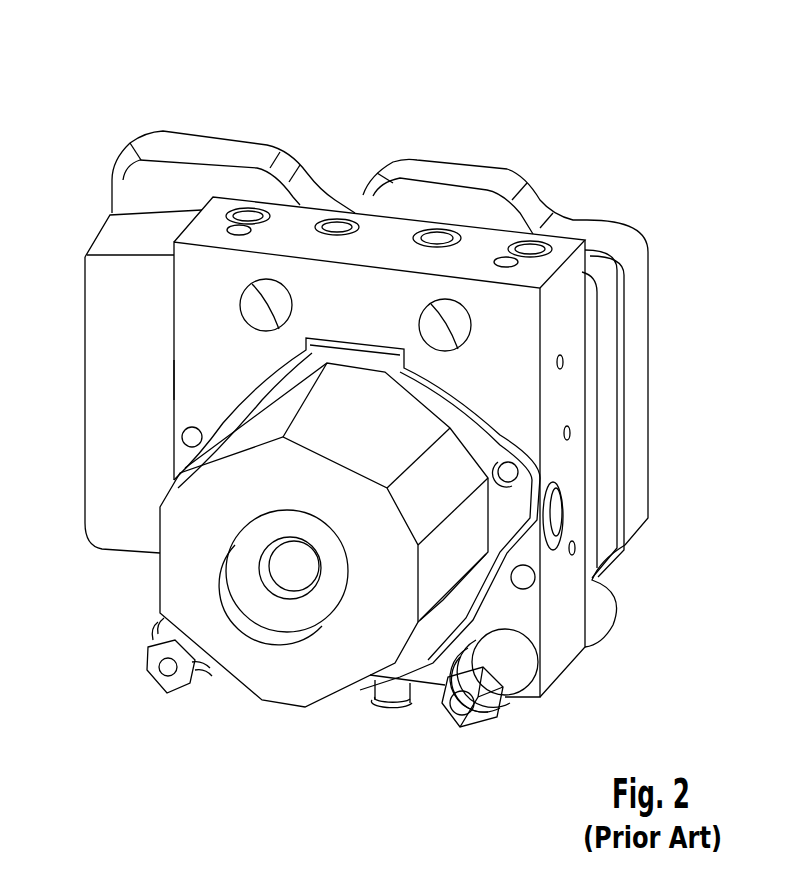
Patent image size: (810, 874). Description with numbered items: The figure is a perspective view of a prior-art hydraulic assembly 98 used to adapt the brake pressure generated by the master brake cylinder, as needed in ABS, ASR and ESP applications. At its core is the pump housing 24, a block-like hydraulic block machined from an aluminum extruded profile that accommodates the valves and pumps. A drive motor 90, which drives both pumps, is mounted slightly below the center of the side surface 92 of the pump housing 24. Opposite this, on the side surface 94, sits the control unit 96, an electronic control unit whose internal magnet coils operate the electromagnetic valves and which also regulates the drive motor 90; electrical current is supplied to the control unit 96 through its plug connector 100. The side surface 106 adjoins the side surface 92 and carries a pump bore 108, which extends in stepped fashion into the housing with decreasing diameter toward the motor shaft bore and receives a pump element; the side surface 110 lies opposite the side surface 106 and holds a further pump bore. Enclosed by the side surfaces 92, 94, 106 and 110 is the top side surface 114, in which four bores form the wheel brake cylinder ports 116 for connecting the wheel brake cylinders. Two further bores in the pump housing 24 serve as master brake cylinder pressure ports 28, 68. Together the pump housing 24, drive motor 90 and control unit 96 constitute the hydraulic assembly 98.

The hydraulic assembly 98 is at (146, 83).
The control unit 96 is at (242, 150).
The pump housing 24 is at (297, 227).
The wheel brake cylinder ports 116 is at (437, 240).
The side surface 114 is at (480, 240).
The side surface 94 is at (567, 237).
The plug connector 100 is at (107, 320).
The side surface 110 is at (173, 381).
The master brake cylinder pressure port 68 is at (243, 304).
The master brake cylinder pressure port 28 is at (430, 318).
The side surface 92 is at (517, 382).
The pump bore 108 is at (553, 495).
The drive motor 90 is at (173, 580).
The side surface 106 is at (579, 655).